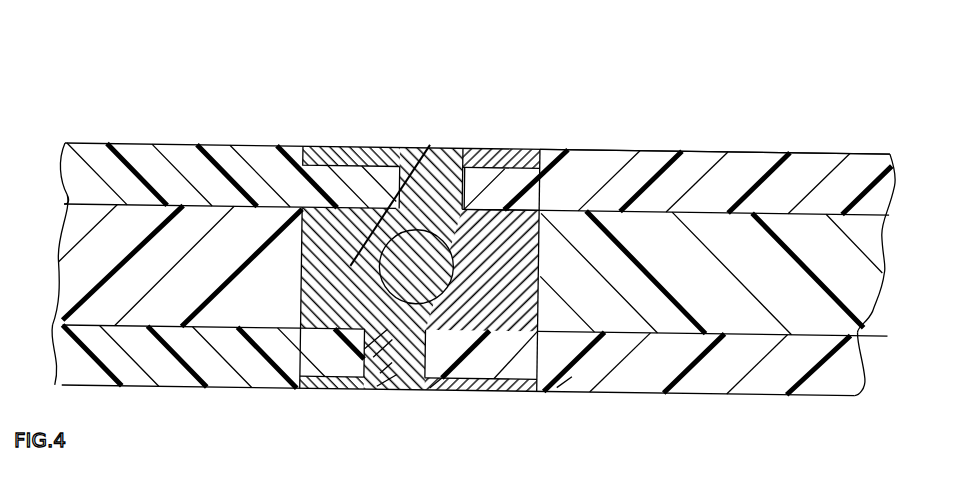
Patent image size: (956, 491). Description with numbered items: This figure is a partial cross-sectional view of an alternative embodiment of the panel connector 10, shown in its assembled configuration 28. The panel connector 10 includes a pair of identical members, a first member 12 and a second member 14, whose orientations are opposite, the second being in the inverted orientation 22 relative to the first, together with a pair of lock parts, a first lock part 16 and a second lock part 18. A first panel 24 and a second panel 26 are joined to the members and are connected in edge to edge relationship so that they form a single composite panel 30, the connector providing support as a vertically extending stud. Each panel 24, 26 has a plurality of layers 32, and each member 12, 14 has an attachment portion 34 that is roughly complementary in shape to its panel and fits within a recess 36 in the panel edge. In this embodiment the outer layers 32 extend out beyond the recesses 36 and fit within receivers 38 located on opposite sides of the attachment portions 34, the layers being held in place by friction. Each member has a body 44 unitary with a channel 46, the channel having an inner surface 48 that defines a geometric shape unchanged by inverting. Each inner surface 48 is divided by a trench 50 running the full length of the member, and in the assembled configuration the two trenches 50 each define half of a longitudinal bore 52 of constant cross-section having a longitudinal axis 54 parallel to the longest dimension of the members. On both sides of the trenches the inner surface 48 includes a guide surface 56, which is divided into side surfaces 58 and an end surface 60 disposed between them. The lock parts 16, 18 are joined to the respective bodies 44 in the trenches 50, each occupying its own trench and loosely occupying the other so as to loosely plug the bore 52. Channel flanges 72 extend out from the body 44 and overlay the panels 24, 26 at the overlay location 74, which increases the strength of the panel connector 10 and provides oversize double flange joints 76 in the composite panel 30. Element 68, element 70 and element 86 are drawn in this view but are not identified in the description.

The panel connector 10 is at (446, 41).
The first member 12 is at (323, 141).
The second member 14 is at (513, 141).
The first lock part 16 is at (379, 306).
The second lock part 18 is at (563, 318).
The inverted orientation 22 is at (176, 343).
The first panel 24 is at (167, 142).
The second panel 26 is at (793, 140).
The assembled configuration 28 is at (139, 387).
The composite panel 30 is at (745, 415).
The layers 32 is at (135, 203).
The attachment portion 34 is at (251, 200).
The recesses 36 is at (253, 199).
The receivers 38 is at (543, 184).
The body 44 is at (288, 199).
The channel 46 is at (390, 171).
The inner surface 48 is at (458, 141).
The trench 50 is at (543, 191).
The longitudinal bore 52 is at (568, 205).
The longitudinal axis 54 is at (430, 354).
The guide surface 56 is at (375, 341).
The side surfaces 58 is at (380, 382).
The end surface 60 is at (376, 353).
The collar 68 is at (383, 369).
The collar flange 70 is at (433, 383).
The channel flanges 72 is at (555, 140).
The overlay location 74 is at (560, 381).
The oversize double flange joints 76 is at (473, 370).
The lower flange 86 is at (330, 409).